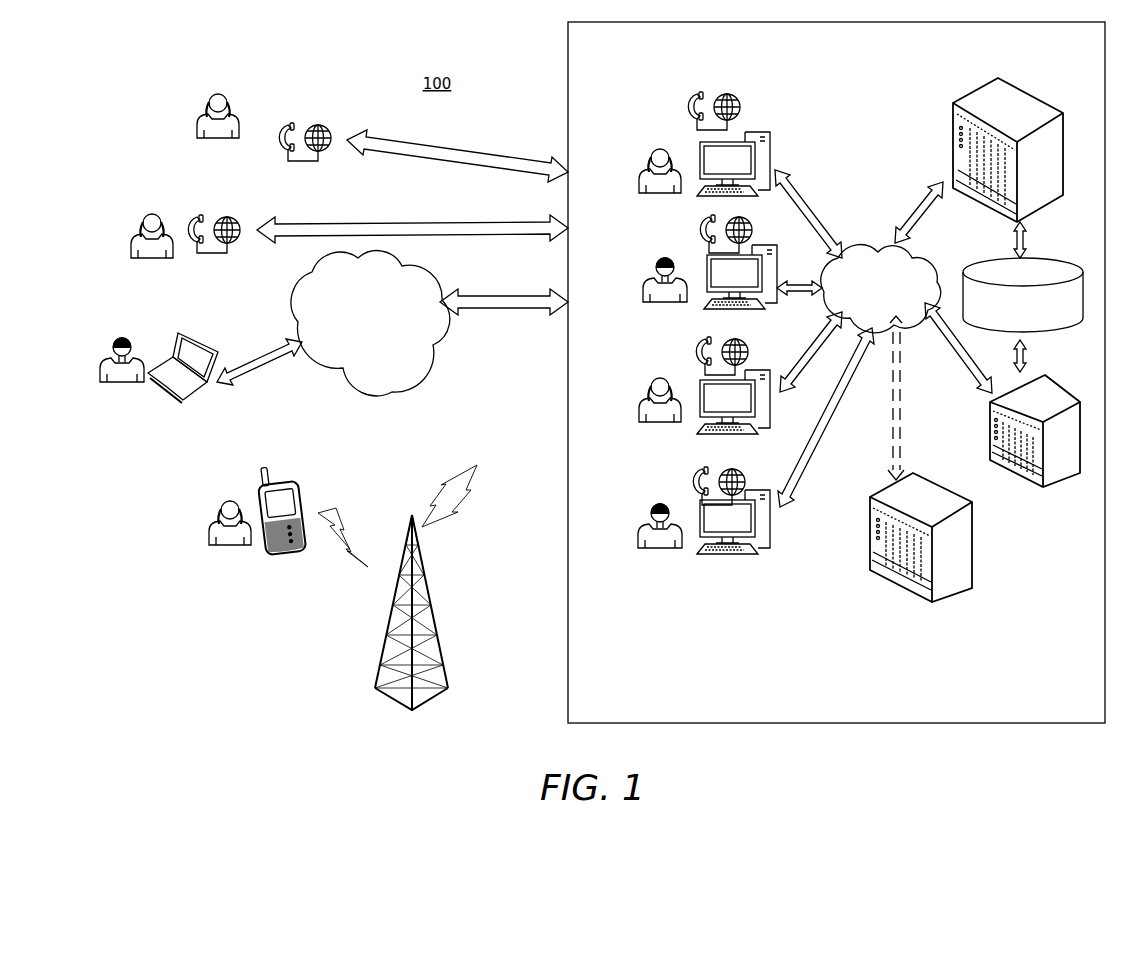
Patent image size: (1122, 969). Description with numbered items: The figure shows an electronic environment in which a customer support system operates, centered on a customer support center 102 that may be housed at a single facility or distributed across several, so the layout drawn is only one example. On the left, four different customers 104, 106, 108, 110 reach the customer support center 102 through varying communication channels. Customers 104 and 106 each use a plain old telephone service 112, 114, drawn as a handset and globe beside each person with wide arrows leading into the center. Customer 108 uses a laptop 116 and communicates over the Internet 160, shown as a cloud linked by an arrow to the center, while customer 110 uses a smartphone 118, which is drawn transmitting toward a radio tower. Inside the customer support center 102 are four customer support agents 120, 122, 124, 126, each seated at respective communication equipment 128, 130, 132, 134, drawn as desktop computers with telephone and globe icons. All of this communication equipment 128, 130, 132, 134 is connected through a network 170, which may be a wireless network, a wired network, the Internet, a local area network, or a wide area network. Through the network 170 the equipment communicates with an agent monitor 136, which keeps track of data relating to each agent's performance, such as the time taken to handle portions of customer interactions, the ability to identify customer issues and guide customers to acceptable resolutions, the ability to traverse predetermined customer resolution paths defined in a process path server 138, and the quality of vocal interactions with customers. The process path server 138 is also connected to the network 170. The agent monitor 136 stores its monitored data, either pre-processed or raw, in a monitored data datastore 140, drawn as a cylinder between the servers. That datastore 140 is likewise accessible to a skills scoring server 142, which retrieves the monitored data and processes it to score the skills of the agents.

The customer support center 102 is at (836, 372).
The customer 104 is at (206, 89).
The customer 106 is at (140, 213).
The customer 108 is at (117, 340).
The customer 110 is at (222, 501).
The plain old telephone service 112 is at (274, 115).
The plain old telephone service 114 is at (190, 209).
The laptop 116 is at (196, 337).
The smartphone 118 is at (276, 467).
The customer support agent 120 is at (658, 150).
The customer support agent 122 is at (662, 258).
The customer support agent 124 is at (660, 375).
The customer support agent 126 is at (660, 503).
The communication equipment 128 is at (753, 132).
The communication equipment 130 is at (758, 252).
The communication equipment 132 is at (748, 360).
The communication equipment 134 is at (738, 546).
The agent monitor 136 is at (1044, 452).
The process path server 138 is at (892, 562).
The monitored data datastore 140 is at (1023, 295).
The skills scoring server 142 is at (971, 136).
The Internet 160 is at (370, 323).
The network 170 is at (881, 289).